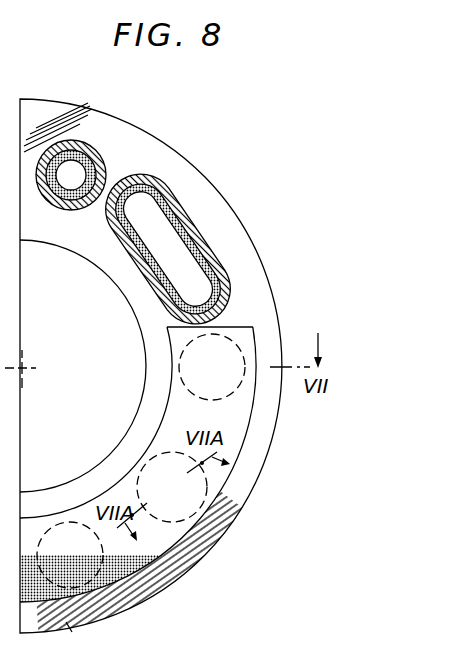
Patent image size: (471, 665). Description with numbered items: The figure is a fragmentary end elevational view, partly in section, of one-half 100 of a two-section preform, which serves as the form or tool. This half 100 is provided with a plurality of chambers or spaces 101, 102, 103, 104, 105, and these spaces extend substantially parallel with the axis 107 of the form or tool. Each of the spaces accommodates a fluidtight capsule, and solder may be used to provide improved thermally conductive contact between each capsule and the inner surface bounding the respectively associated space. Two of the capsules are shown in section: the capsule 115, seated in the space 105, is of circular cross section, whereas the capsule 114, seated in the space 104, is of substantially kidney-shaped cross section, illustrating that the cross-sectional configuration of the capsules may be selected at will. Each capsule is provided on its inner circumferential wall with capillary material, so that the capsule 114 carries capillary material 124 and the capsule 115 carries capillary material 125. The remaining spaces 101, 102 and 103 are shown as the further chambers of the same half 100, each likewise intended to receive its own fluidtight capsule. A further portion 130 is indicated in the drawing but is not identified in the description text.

The one-half of a two-section preform 100 is at (262, 246).
The chamber or space 101 is at (256, 336).
The chamber or space 102 is at (238, 500).
The chamber or space 103 is at (89, 641).
The chamber or space 104 is at (188, 221).
The chamber or space 105 is at (98, 152).
The axis 107 is at (24, 371).
The fluidtight capsule 114 is at (225, 292).
The fluidtight capsule 115 is at (40, 183).
The capillary material 124 is at (165, 292).
The capillary material 125 is at (63, 208).
The sector segment 130 is at (262, 440).